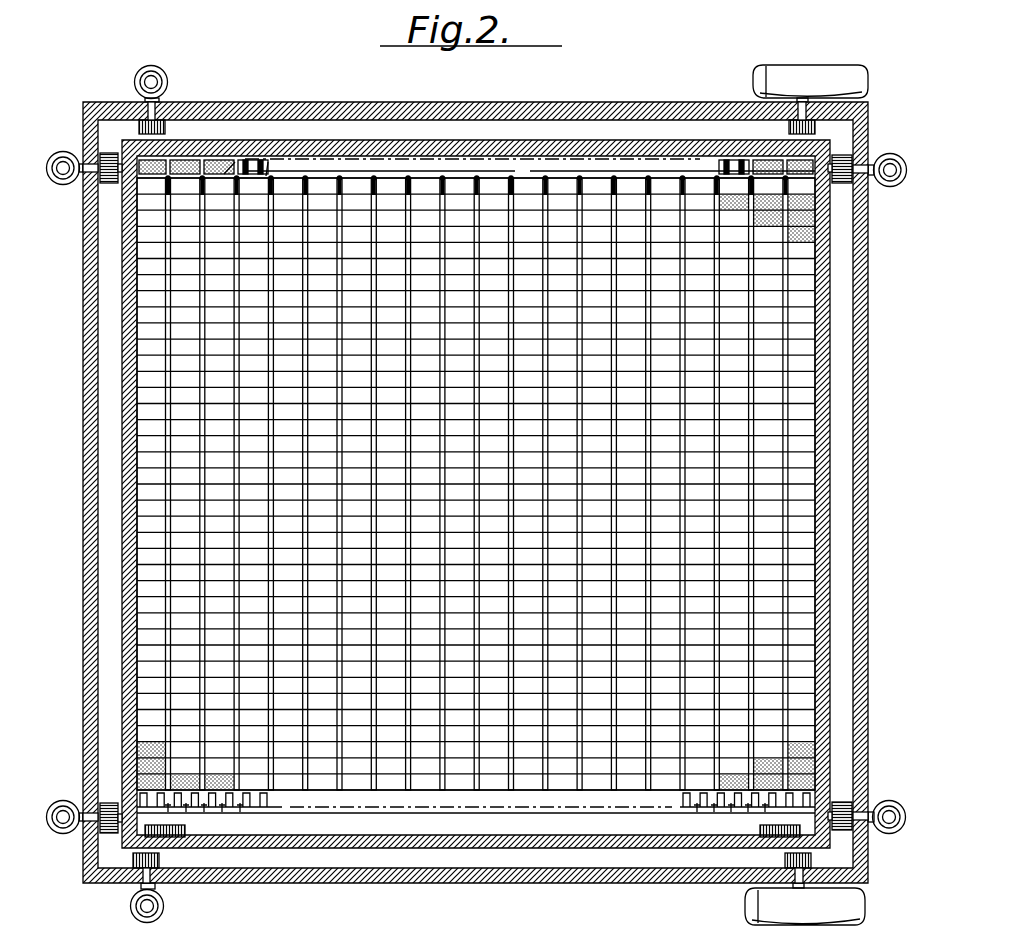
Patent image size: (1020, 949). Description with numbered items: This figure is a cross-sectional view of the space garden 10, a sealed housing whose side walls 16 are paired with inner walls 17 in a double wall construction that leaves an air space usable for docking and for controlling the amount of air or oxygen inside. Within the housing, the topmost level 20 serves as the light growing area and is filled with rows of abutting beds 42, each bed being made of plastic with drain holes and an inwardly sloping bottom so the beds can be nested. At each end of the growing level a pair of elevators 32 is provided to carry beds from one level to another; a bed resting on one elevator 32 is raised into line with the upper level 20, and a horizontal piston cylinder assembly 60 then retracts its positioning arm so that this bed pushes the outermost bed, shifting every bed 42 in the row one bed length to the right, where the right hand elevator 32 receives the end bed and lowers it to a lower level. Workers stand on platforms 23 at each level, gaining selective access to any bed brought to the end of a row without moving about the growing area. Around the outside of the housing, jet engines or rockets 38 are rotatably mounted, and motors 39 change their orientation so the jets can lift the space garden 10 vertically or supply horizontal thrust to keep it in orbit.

The space garden 10 is at (661, 100).
The side walls 16 is at (262, 93).
The inner walls 17 is at (307, 141).
The topmost level 20 is at (390, 792).
The platforms 23 is at (287, 828).
The elevator 32 is at (266, 158).
The jet engines or rockets 38 is at (135, 82).
The motors 39 is at (100, 185).
The bed 42 is at (218, 159).
The piston cylinder assembly 60 is at (815, 626).